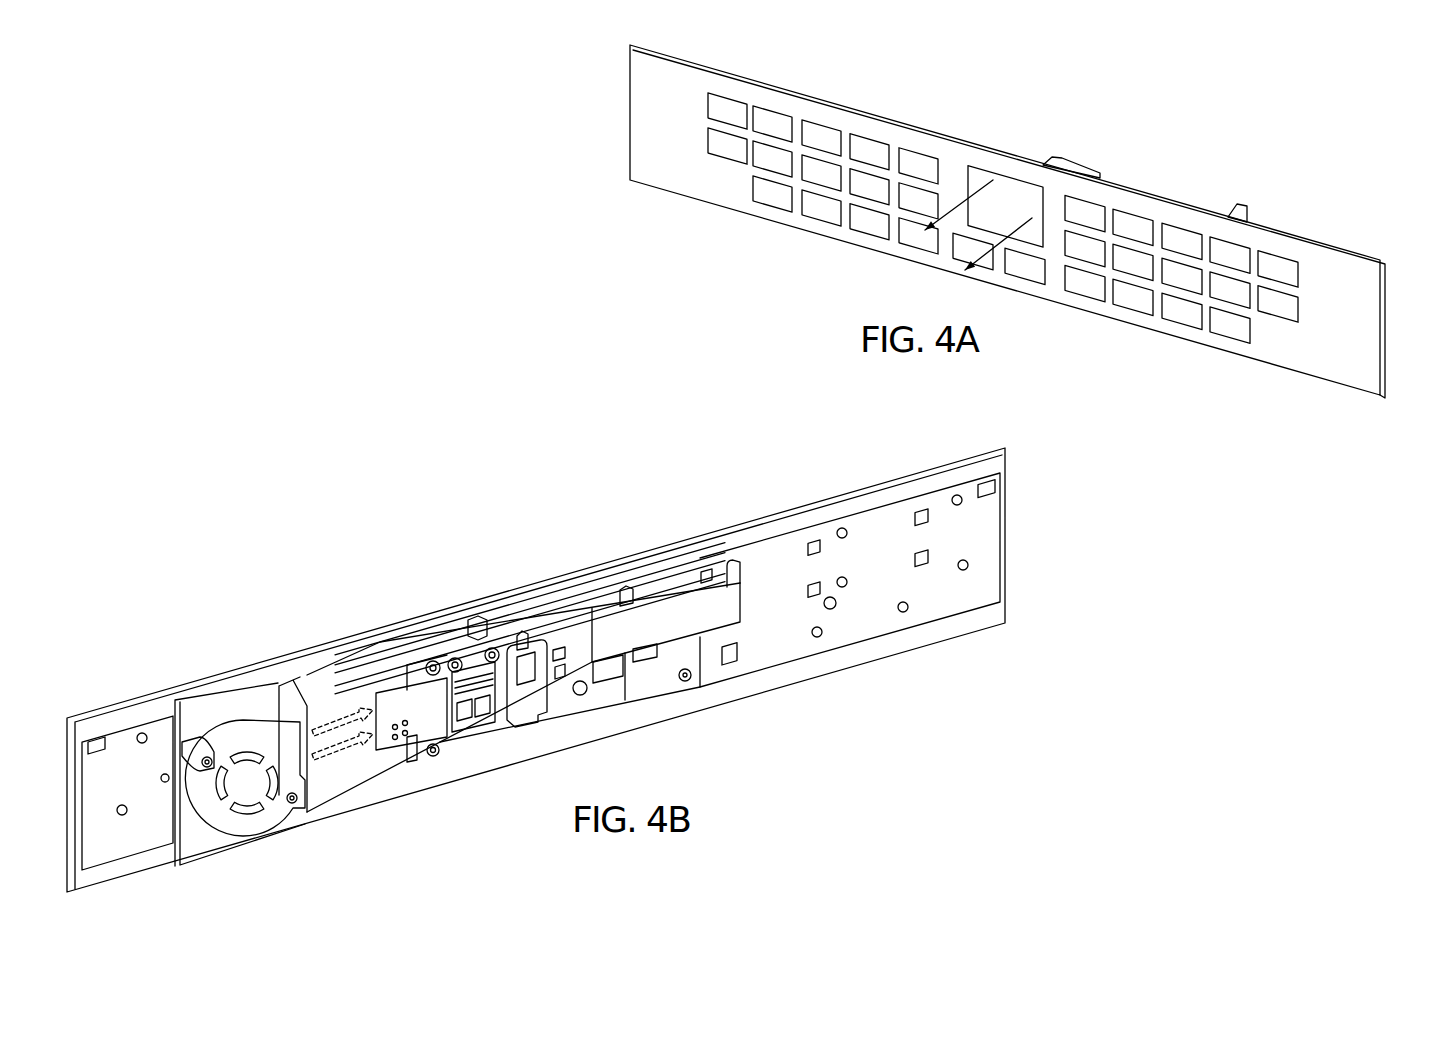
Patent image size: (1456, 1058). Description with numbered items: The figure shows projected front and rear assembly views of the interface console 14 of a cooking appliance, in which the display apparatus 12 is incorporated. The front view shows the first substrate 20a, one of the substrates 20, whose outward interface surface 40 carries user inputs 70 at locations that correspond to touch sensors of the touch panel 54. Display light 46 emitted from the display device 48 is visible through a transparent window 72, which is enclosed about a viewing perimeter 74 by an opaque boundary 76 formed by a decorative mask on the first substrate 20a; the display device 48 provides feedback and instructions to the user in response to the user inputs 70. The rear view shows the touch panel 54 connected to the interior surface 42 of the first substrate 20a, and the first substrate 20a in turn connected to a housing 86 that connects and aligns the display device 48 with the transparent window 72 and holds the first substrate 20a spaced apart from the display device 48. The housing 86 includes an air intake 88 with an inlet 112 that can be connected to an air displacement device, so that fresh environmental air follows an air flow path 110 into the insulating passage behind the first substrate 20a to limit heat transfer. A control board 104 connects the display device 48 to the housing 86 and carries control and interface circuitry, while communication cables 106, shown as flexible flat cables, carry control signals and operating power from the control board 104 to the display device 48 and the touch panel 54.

In FIG. 4A, the display apparatus 12 is at (1058, 175).
In FIG. 4A, the interface console 14 is at (600, 152).
In FIG. 4B, the interface console 14 is at (370, 538).
In FIG. 4A, the substrate 20 is at (1036, 238).
In FIG. 4B, the substrate 20 is at (595, 647).
In FIG. 4A, the first substrate 20a is at (1036, 238).
In FIG. 4B, the first substrate 20a is at (595, 647).
In FIG. 4A, the interface surface 40 is at (1180, 220).
In FIG. 4B, the interior surface 42 is at (946, 474).
In FIG. 4A, the display light 46 is at (978, 178).
In FIG. 4A, the display device 48 is at (981, 158).
In FIG. 4B, the touch panel 54 is at (983, 543).
In FIG. 4A, the user inputs 70 is at (1180, 312).
In FIG. 4A, the transparent window 72 is at (981, 158).
In FIG. 4A, the viewing perimeter 74 is at (1003, 193).
In FIG. 4A, the opaque boundary 76 is at (957, 226).
In FIG. 4B, the housing 86 is at (550, 597).
In FIG. 4A, the air intake 88 is at (1232, 207).
In FIG. 4B, the air intake 88 is at (318, 683).
In FIG. 4B, the control board 104 is at (435, 718).
In FIG. 4B, the communication cables 106 is at (212, 728).
In FIG. 4B, the air flow path 110 is at (344, 698).
In FIG. 4B, the inlet 112 is at (308, 810).